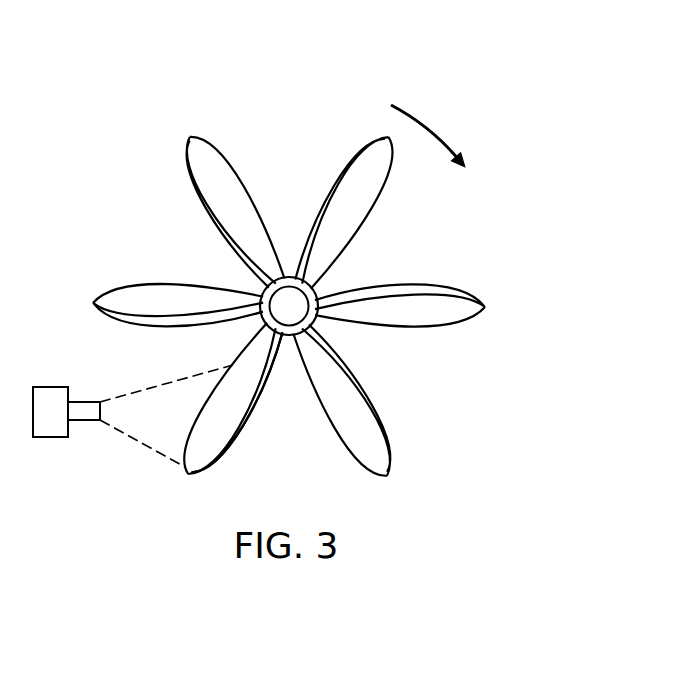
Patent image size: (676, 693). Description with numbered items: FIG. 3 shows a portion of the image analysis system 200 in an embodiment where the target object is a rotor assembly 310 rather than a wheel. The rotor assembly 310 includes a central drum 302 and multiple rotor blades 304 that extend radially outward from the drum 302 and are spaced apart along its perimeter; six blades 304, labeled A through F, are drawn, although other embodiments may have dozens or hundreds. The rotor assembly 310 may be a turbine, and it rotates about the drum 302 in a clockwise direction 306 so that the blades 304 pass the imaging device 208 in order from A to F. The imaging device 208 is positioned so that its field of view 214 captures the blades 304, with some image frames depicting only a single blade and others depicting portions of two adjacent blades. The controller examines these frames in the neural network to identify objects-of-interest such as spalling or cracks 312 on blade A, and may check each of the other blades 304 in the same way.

The image analysis system 200 is at (456, 58).
The imaging device 208 is at (52, 387).
The field of view 214 is at (140, 448).
The drum 302 is at (263, 288).
The rotor blades 304 is at (197, 190).
The clockwise direction 306 is at (438, 123).
The rotor assembly 310 is at (282, 170).
The cracks 312 is at (210, 445).